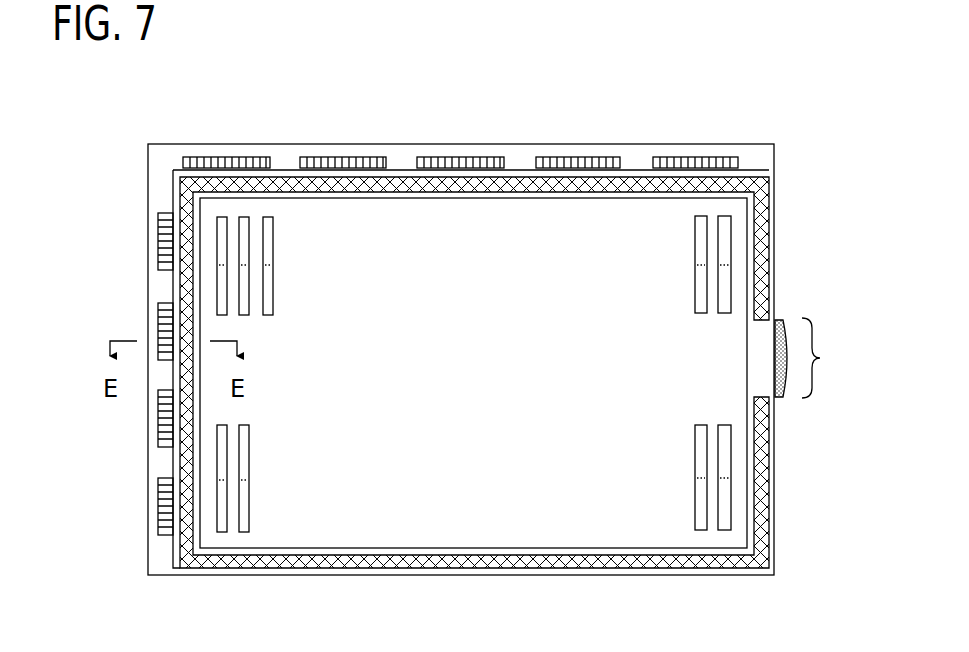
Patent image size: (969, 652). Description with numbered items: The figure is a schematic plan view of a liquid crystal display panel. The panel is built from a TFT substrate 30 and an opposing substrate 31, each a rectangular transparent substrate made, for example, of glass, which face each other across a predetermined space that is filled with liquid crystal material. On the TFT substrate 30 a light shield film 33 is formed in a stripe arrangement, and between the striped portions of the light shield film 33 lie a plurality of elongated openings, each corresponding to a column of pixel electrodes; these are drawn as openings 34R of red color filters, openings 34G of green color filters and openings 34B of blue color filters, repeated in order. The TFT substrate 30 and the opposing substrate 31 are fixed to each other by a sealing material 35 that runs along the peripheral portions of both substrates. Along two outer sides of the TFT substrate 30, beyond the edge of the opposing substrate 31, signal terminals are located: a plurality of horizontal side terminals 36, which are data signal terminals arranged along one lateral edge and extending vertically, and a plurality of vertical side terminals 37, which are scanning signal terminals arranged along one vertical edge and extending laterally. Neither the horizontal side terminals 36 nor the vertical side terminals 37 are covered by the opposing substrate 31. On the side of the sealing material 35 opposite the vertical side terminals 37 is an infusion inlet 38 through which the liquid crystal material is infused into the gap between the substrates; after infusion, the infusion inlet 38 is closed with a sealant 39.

The TFT substrate 30 is at (462, 144).
The opposing substrate 31 is at (630, 168).
The light shield film 33 is at (472, 548).
The openings of red color filters 34R is at (222, 217).
The openings of green color filters 34G is at (244, 217).
The openings of blue color filters 34B is at (268, 217).
The sealing material 35 is at (760, 218).
The horizontal side terminals 36 is at (562, 157).
The vertical side terminals 37 is at (158, 243).
The infusion inlet 38 is at (830, 358).
The sealant 39 is at (785, 395).